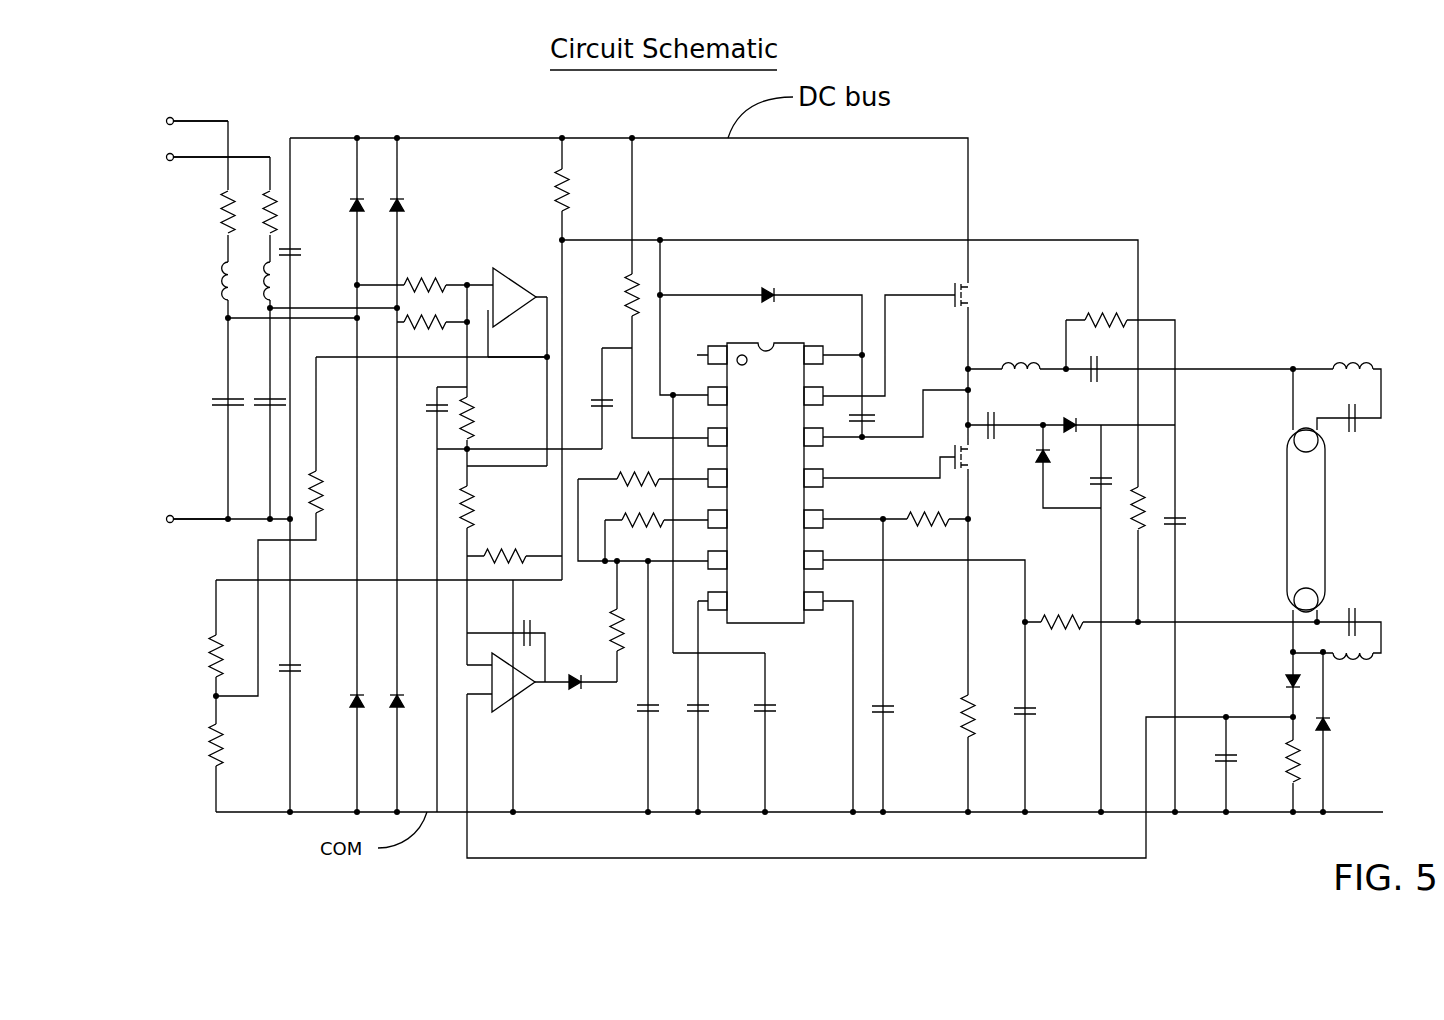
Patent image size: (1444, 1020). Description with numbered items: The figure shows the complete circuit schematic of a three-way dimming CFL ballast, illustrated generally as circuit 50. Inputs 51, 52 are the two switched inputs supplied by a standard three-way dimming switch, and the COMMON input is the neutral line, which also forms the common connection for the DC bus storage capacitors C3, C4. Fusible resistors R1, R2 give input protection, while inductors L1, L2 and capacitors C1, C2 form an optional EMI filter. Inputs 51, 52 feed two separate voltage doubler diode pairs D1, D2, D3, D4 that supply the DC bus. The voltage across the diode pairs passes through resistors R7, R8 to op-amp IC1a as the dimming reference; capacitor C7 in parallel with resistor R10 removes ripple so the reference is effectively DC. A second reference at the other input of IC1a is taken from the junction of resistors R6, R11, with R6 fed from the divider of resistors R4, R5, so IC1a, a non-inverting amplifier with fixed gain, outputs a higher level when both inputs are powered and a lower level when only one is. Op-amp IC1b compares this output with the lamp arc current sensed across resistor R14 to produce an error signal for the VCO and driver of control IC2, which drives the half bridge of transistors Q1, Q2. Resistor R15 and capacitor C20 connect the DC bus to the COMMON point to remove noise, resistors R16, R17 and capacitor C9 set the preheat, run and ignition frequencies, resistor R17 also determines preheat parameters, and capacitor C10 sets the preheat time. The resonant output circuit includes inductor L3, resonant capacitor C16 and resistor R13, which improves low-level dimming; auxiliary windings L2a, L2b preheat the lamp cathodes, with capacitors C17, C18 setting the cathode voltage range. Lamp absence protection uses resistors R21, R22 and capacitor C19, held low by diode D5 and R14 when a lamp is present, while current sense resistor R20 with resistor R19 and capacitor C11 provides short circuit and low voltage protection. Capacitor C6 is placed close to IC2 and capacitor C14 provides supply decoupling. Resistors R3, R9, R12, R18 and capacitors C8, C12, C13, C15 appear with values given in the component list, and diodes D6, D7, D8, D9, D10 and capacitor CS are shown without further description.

The circuit 50 is at (1150, 227).
The input 51 is at (179, 122).
The input 52 is at (200, 158).
The COMMON input COMMON is at (170, 536).
The fusible resistor R1 is at (214, 212).
The fusible resistor R2 is at (256, 212).
The resistor R3 is at (576, 190).
The resistor R4 is at (201, 656).
The resistor R5 is at (201, 745).
The resistor R6 is at (329, 502).
The resistor R7 is at (425, 275).
The resistor R8 is at (425, 312).
The resistor R9 is at (505, 546).
The resistor R10 is at (488, 414).
The resistor R11 is at (517, 345).
The resistor R12 is at (486, 507).
The resistor R13 is at (1106, 311).
The current sense resistor R14 is at (1271, 767).
The resistor R15 is at (612, 295).
The resistor R16 is at (638, 469).
The resistor R17 is at (643, 510).
The resistor R18 is at (598, 630).
The resistor R19 is at (928, 507).
The current sense resistor R20 is at (985, 720).
The resistor R21 is at (1062, 611).
The resistor R22 is at (1126, 522).
The capacitor C1 is at (215, 392).
The capacitor C2 is at (261, 392).
The DC bus storage capacitor C3 is at (303, 252).
The DC bus storage capacitor C4 is at (303, 671).
The capacitor C6 is at (782, 709).
The capacitor C7 is at (424, 410).
The capacitor C8 is at (530, 619).
The capacitor C9 is at (631, 709).
The capacitor C10 is at (717, 722).
The capacitor C11 is at (905, 710).
The capacitor C12 is at (1207, 775).
The capacitor C13 is at (995, 411).
The capacitor C14 is at (1079, 483).
The capacitor C15 is at (1099, 356).
The resonant capacitor C16 is at (1197, 522).
The capacitor C17 is at (1360, 436).
The capacitor C18 is at (1357, 606).
The capacitor C19 is at (1047, 714).
The capacitor C20 is at (588, 393).
The current sense capacitor CS is at (879, 418).
The diode D1 is at (341, 206).
The diode D2 is at (412, 206).
The diode D3 is at (342, 702).
The diode D4 is at (412, 702).
The diode D5 is at (1277, 683).
The diode D6 is at (1338, 726).
The diode D7 is at (570, 670).
The diode D8 is at (767, 282).
The diode D9 is at (1064, 414).
The diode D10 is at (1025, 475).
The filter inductor L1 is at (209, 281).
The filter inductor L2 is at (251, 281).
The inductor L3 is at (1020, 352).
The auxiliary cathode winding L2a is at (1353, 350).
The auxiliary cathode winding L2b is at (1355, 674).
The transistor Q1 is at (979, 296).
The transistor Q2 is at (978, 457).
The op-amp IC1a is at (511, 279).
The op-amp IC1b is at (528, 690).
The ballast control IC IC2 is at (760, 467).